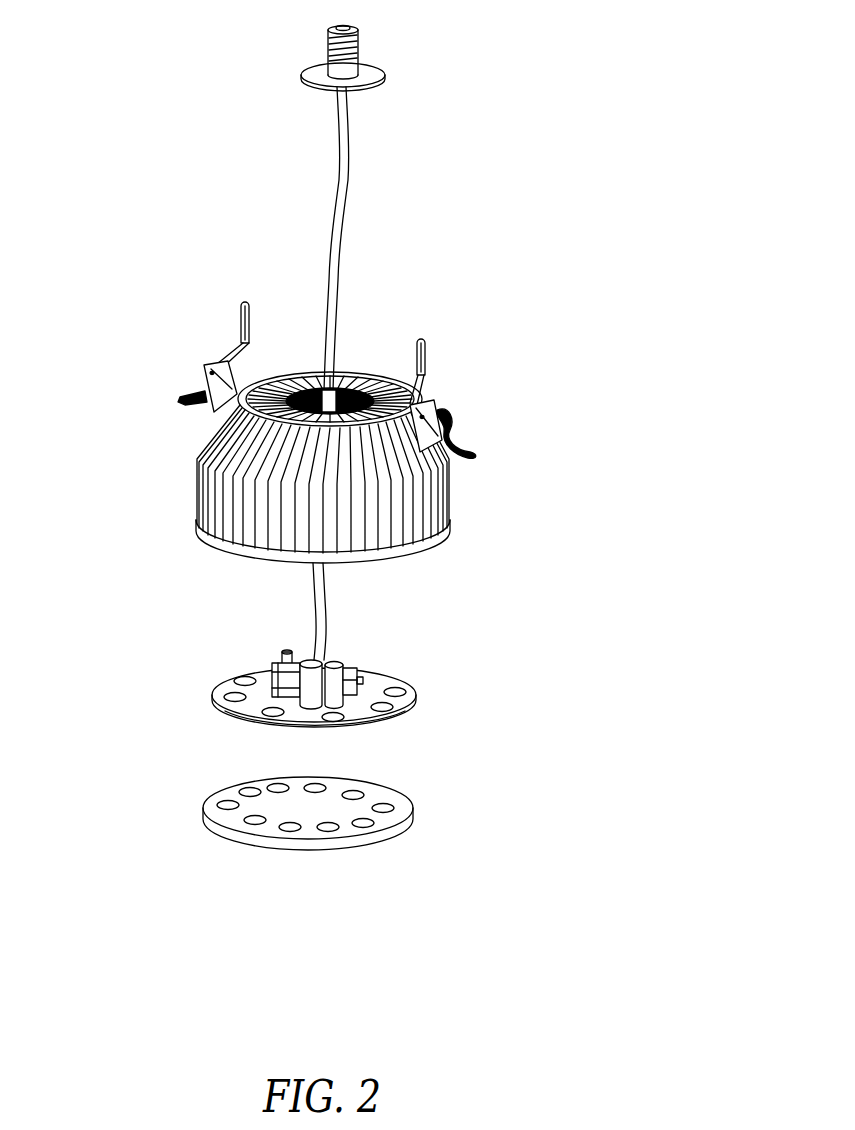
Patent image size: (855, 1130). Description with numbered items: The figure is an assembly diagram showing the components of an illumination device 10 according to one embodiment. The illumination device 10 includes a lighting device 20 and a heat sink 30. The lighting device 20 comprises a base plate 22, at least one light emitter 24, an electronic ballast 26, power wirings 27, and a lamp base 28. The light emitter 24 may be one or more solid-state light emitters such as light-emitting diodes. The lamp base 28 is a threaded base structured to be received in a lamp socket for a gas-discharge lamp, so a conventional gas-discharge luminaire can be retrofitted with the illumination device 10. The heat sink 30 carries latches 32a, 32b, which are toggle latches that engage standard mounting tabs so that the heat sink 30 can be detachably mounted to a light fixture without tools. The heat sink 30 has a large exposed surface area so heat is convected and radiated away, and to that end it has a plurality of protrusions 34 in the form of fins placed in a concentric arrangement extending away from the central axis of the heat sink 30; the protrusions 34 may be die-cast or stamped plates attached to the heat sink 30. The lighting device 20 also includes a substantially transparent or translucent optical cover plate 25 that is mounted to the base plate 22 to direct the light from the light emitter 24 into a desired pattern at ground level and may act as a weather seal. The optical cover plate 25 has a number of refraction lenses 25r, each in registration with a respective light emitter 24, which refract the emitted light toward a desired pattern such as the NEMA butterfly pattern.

The illumination device 10 is at (136, 70).
The lighting device 20 is at (180, 658).
The base plate 22 is at (417, 693).
The light emitter 24 is at (340, 727).
The optical cover plate 25 is at (392, 842).
The refraction lens 25r is at (318, 826).
The electronic ballast 26 is at (352, 664).
The power wirings 27 is at (326, 608).
The lamp base 28 is at (358, 42).
The heat sink 30 is at (145, 458).
The latch 32a is at (241, 322).
The latch 32b is at (425, 358).
The protrusions 34 is at (420, 497).